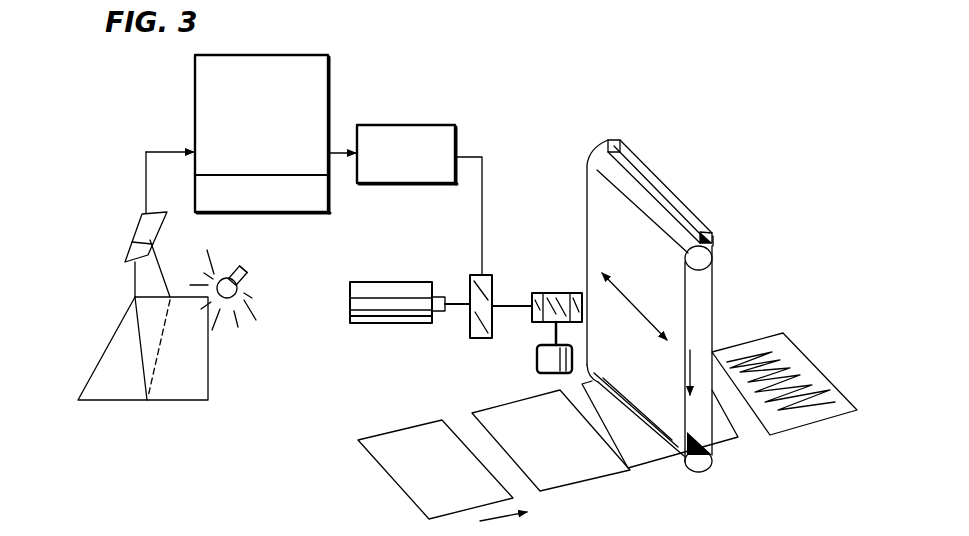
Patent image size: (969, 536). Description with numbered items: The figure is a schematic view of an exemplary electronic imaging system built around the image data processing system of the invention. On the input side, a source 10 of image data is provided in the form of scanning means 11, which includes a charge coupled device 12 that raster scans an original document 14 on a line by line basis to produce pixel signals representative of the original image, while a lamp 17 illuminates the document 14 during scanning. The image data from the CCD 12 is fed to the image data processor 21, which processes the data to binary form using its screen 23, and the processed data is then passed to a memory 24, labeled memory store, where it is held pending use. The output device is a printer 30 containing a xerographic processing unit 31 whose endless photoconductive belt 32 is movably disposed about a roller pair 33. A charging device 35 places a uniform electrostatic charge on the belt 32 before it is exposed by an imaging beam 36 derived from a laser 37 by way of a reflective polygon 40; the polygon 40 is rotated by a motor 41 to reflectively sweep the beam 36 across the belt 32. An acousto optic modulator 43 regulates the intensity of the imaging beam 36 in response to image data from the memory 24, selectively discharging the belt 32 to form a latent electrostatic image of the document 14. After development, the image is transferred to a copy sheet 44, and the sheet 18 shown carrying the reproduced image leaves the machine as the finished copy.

The source of image data 10 is at (128, 176).
The scanning means 11 is at (113, 254).
The charge coupled device 12 is at (158, 218).
The original document 14 is at (205, 392).
The lamp 17 is at (249, 270).
The printed copy 18 is at (783, 376).
The image data processor 21 is at (330, 66).
The screen 23 is at (330, 200).
The memory 24 is at (438, 125).
The printer 30 is at (740, 212).
The xerographic processing unit 31 is at (722, 303).
The photoconductive belt 32 is at (593, 205).
The roller pair 33 is at (704, 263).
The charging device 35 is at (633, 158).
The imaging beam 36 is at (515, 302).
The laser 37 is at (370, 282).
The reflective polygon 40 is at (556, 293).
The motor 41 is at (537, 360).
The acousto optic modulator 43 is at (470, 282).
The copy sheet 44 is at (778, 436).